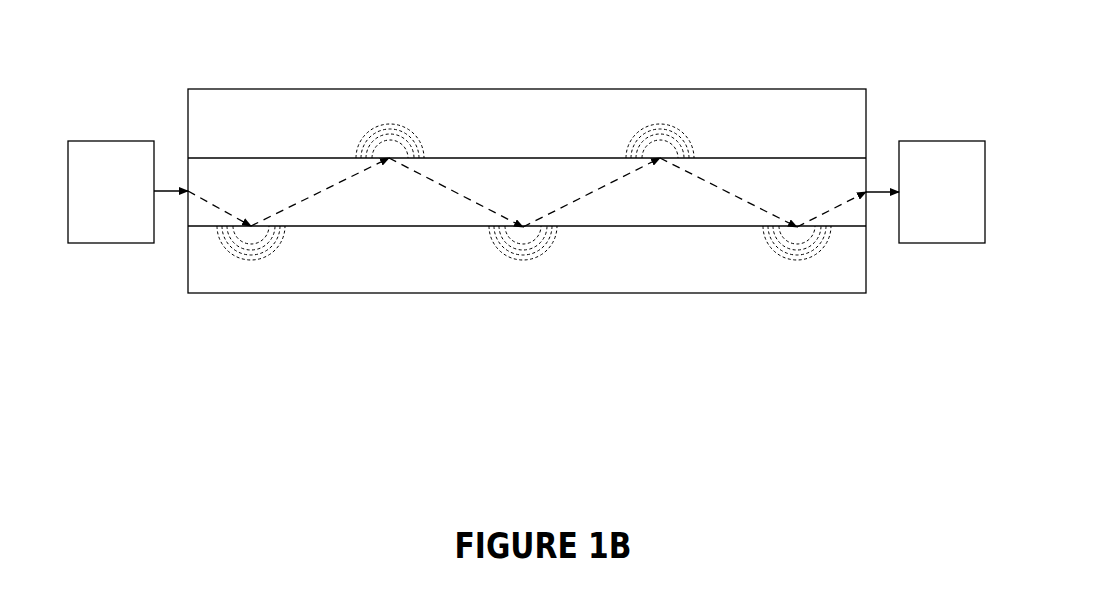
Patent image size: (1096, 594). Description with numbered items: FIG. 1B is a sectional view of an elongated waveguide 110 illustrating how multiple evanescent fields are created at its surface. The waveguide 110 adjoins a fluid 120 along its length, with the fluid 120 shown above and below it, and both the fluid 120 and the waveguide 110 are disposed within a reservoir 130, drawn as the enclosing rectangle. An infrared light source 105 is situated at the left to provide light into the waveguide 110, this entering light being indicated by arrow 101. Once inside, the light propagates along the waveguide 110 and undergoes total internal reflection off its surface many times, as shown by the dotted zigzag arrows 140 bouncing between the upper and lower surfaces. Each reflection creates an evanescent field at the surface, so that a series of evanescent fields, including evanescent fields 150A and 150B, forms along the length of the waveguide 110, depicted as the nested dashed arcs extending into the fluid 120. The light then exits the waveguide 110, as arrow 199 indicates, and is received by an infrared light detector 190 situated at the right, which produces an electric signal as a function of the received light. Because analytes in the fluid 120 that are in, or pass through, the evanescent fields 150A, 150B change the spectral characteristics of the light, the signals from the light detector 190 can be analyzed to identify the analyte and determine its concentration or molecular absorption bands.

The arrow indicating light entering the waveguide 101 is at (171, 192).
The infrared light source 105 is at (99, 222).
The waveguide 110 is at (390, 200).
The fluid 120 is at (260, 137).
The reservoir 130 is at (578, 88).
The IR beam path 140 is at (660, 158).
The evanescent field 150A is at (412, 130).
The evanescent field 150B is at (507, 255).
The infrared light detector 190 is at (929, 221).
The arrow indicating light exiting the waveguide 199 is at (882, 190).